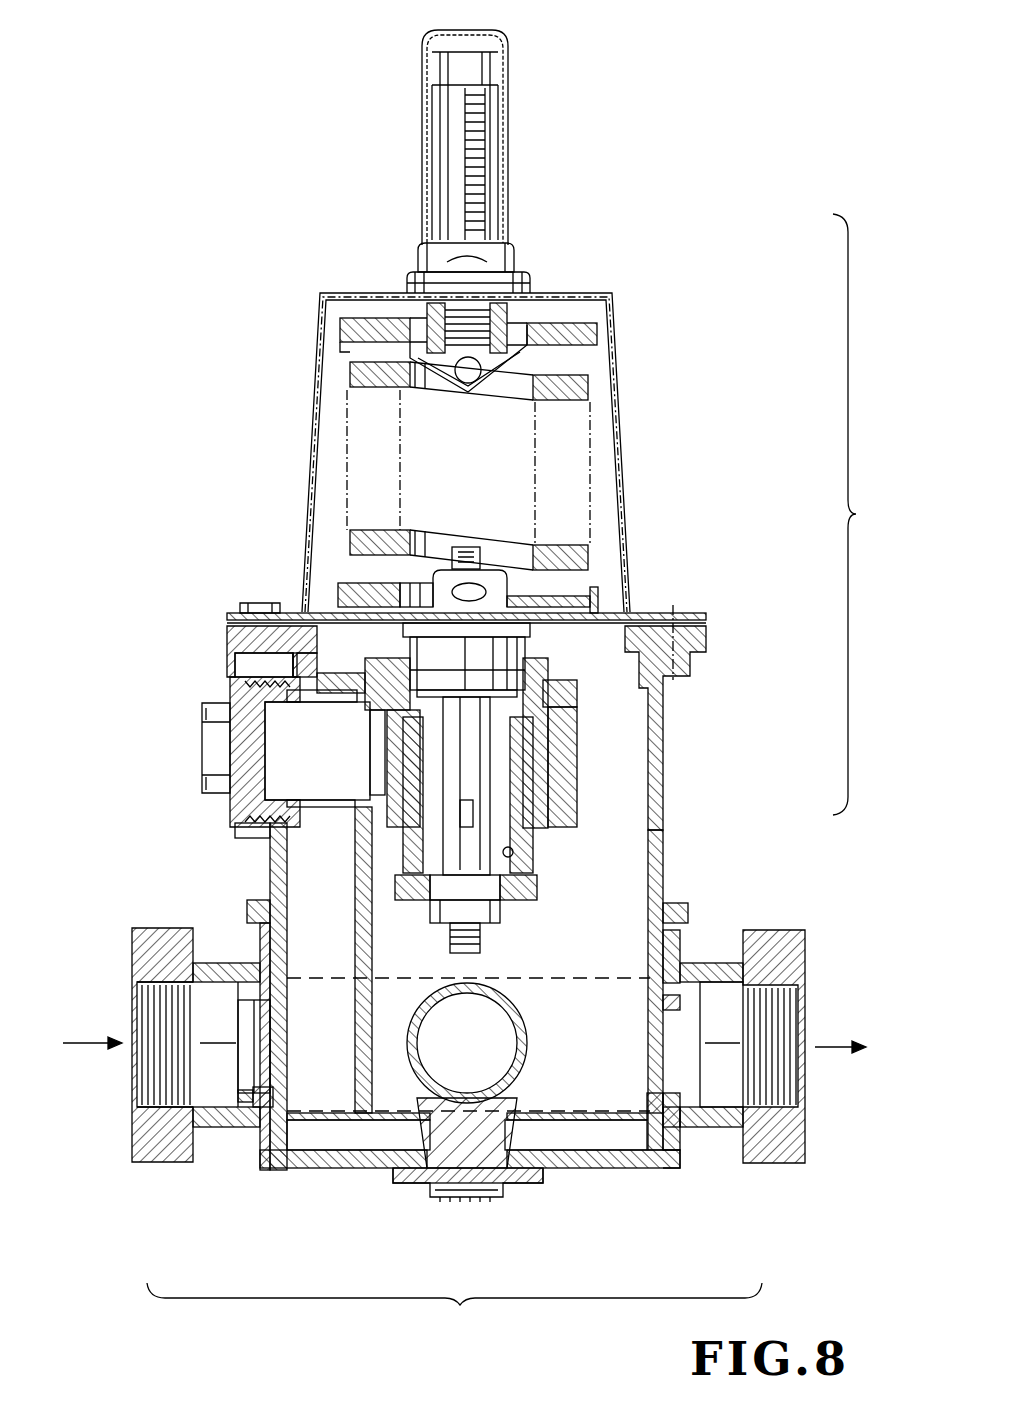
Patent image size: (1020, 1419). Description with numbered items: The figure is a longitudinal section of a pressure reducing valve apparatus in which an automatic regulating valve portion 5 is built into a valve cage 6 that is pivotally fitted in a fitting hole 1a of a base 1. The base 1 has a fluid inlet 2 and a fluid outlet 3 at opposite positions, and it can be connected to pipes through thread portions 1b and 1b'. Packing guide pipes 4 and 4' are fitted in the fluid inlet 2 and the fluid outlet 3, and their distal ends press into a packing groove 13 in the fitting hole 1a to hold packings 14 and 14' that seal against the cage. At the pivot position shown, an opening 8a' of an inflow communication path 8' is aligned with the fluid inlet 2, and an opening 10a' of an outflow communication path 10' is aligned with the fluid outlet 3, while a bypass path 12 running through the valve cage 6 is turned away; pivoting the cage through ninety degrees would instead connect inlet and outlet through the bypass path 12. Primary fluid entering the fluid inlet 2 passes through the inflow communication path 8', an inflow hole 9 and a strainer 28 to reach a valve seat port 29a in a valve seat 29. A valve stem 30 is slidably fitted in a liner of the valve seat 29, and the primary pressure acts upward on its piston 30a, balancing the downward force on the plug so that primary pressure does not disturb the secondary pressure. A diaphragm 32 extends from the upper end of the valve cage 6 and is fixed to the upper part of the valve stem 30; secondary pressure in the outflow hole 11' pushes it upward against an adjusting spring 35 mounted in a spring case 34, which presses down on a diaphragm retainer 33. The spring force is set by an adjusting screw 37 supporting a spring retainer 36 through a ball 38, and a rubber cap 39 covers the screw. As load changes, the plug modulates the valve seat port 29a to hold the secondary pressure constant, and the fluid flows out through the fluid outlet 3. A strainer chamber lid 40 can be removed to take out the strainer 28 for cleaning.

The rubber cap 39 is at (510, 122).
The adjusting screw 37 is at (497, 183).
The spring retainer 36 is at (605, 325).
The ball 38 is at (480, 395).
The adjusting spring 35 is at (580, 560).
The diaphragm retainer 33 is at (600, 597).
The spring case 34 is at (632, 571).
The diaphragm 32 is at (588, 625).
The piston 30a is at (540, 716).
The valve stem 30 is at (480, 762).
The valve cage 6 is at (656, 782).
The valve seat 29 is at (535, 836).
The valve seat port 29a is at (530, 866).
The fitting hole 1a is at (664, 884).
The base 1 is at (456, 1338).
The strainer chamber lid 40 is at (225, 688).
The strainer 28 is at (297, 792).
The inflow hole 9 is at (305, 857).
The fluid inlet 2 is at (250, 1015).
The thread portion 1b is at (132, 1044).
The packing guide pipe 4 is at (168, 1045).
The inflow communication path 8' is at (290, 1043).
The opening 8a' is at (292, 1075).
The packing 14 is at (246, 1143).
The bypass path 12 is at (500, 1050).
The outflow hole 11' is at (510, 1006).
The packing guide pipe 4' is at (636, 1010).
The outflow communication path 10' is at (665, 1044).
The fluid outlet 3 is at (677, 1080).
The packing groove 13 is at (545, 1115).
The packing 14' is at (673, 1167).
The opening 10a' is at (626, 1176).
The thread portion 1b' is at (805, 1046).
The automatic regulating valve portion 5 is at (862, 516).